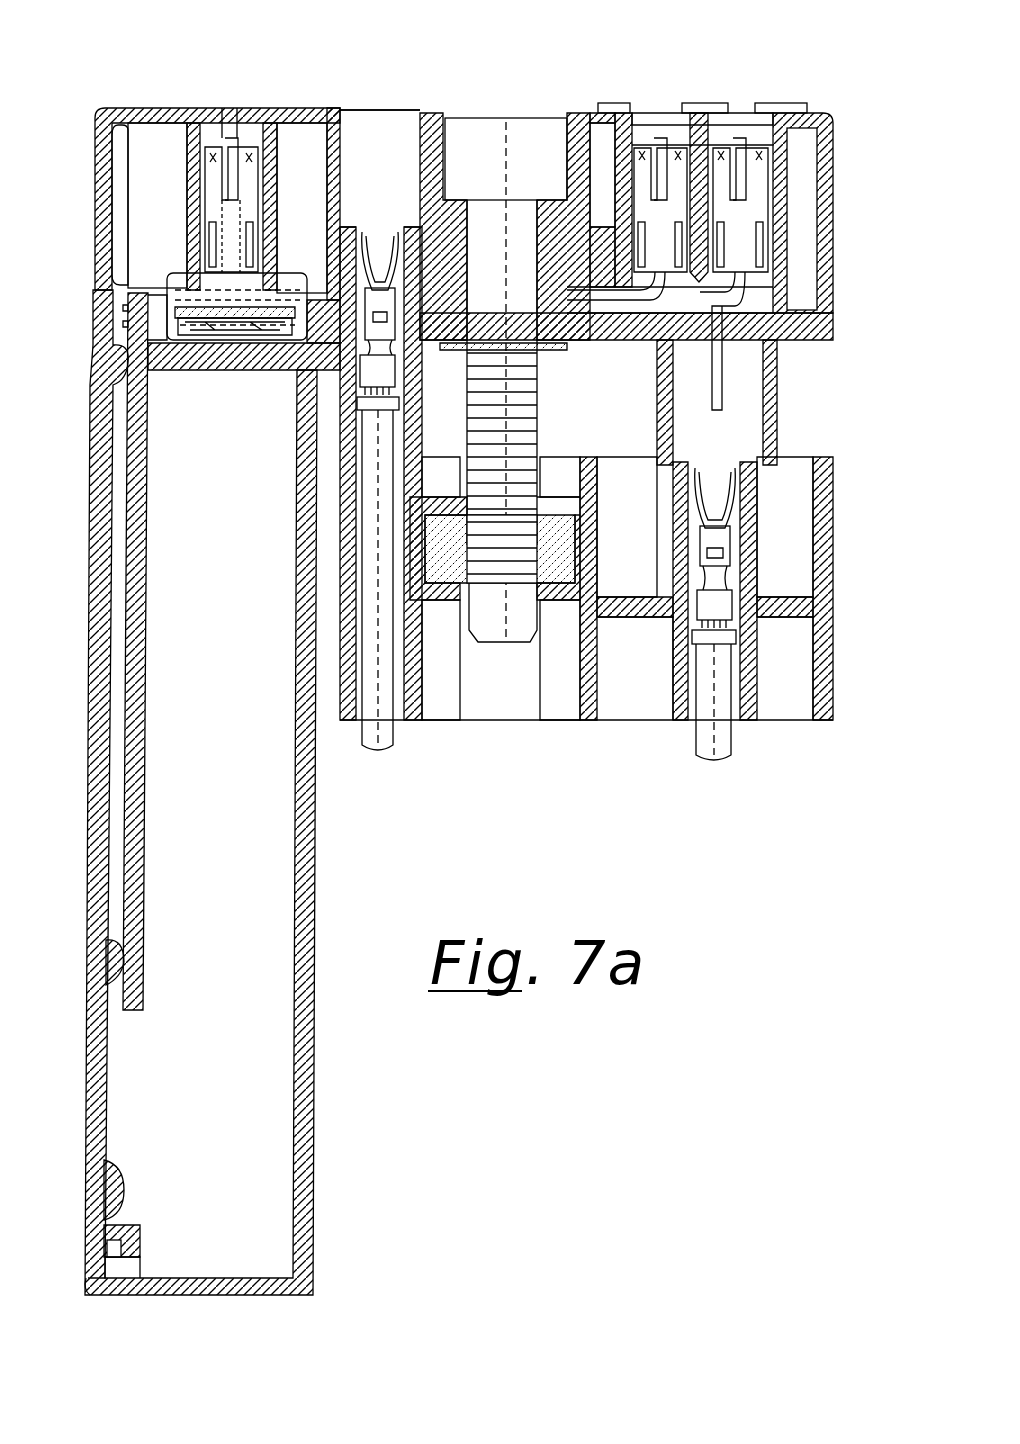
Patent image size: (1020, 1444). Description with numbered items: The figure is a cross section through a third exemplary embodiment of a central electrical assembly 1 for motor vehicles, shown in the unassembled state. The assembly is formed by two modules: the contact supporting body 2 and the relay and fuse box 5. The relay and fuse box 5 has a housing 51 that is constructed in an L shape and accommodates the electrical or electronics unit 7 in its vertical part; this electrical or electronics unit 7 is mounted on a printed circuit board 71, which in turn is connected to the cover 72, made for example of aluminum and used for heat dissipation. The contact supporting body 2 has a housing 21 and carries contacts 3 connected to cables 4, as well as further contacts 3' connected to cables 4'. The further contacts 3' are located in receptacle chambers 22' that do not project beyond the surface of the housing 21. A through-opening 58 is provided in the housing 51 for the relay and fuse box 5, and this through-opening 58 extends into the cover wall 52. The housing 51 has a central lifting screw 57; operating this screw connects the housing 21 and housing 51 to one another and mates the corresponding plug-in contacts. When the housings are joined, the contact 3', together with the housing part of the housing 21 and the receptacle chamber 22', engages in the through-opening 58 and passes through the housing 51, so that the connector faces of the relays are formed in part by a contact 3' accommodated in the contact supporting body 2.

The central electrical assembly 1 is at (562, 70).
The contact supporting body 2 is at (790, 550).
The contacts 3 is at (789, 534).
The further contacts 3' is at (388, 233).
The cables 4 is at (705, 736).
The cables 4' is at (378, 615).
The relay and fuse box 5 is at (627, 147).
The electrical or electronics unit 7 is at (130, 655).
The housing 21 is at (820, 605).
The receptacle chambers 22' is at (408, 505).
The housing 51 is at (835, 195).
The cover wall 52 is at (291, 100).
The central lifting screw 57 is at (485, 150).
The through-opening 58 is at (365, 108).
The printed circuit board 71 is at (125, 765).
The cover 72 is at (95, 1105).